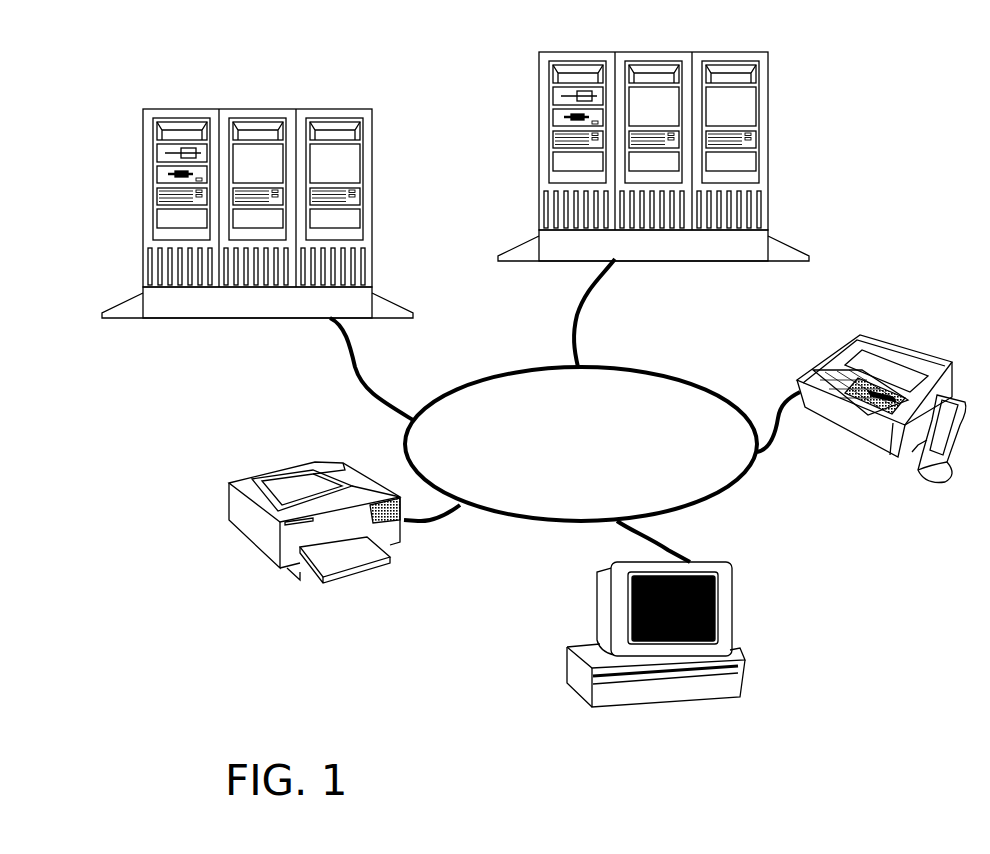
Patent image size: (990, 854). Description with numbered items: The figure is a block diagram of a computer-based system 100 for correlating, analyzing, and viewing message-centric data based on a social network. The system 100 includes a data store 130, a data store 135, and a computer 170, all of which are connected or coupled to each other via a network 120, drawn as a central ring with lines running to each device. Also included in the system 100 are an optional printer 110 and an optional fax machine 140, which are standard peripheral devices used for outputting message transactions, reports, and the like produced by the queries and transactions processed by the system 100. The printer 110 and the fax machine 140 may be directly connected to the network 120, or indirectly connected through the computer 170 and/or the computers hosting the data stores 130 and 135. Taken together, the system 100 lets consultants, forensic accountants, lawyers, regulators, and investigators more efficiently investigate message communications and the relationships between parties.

The computer-based system 100 is at (170, 45).
The printer 110 is at (240, 475).
The network 120 is at (506, 372).
The data store 130 is at (566, 52).
The data store 135 is at (170, 108).
The fax machine 140 is at (862, 338).
The computer 170 is at (575, 645).